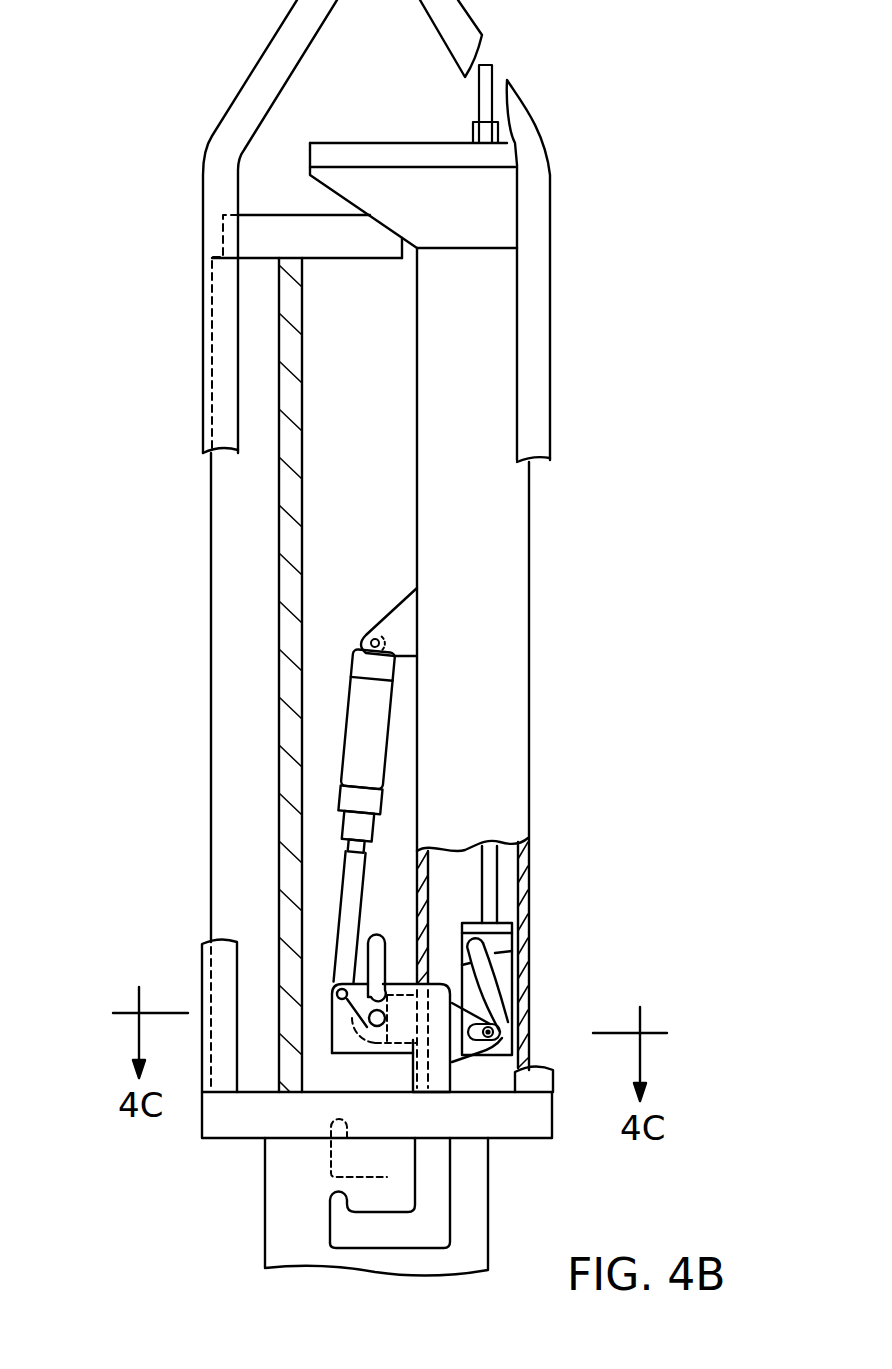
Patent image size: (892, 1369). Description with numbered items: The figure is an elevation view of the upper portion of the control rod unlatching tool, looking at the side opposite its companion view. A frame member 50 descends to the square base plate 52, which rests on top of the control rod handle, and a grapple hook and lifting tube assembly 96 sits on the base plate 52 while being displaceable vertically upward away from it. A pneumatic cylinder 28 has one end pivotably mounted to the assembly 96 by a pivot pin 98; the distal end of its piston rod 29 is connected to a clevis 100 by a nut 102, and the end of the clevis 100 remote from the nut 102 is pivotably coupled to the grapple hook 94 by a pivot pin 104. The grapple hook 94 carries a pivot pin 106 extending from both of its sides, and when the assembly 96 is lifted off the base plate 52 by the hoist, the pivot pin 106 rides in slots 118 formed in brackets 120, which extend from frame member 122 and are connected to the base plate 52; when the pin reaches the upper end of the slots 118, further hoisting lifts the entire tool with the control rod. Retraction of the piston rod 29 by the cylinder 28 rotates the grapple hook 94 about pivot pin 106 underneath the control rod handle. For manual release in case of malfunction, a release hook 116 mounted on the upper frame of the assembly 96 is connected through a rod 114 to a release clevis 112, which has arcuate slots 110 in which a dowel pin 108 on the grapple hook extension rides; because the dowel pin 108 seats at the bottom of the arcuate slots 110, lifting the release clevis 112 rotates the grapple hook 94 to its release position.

The frame member 50 is at (263, 50).
The release hook 116 is at (492, 68).
The grapple hook and lifting tube assembly 96 is at (543, 572).
The pivot pin 98 is at (363, 638).
The pneumatic cylinder 28 is at (345, 740).
The piston rod 29 is at (344, 818).
The slot 118 is at (385, 948).
The frame member 122 is at (266, 922).
The clevis 100 is at (340, 882).
The nut 102 is at (343, 833).
The rod 114 is at (492, 906).
The release clevis 112 is at (512, 935).
The arcuate slot 110 is at (498, 982).
The dowel pin 108 is at (500, 1032).
The bracket 120 is at (310, 993).
The pivot pin 104 is at (335, 997).
The pivot pin 106 is at (383, 1018).
The base plate 52 is at (258, 1123).
The grapple hook 94 is at (440, 1180).